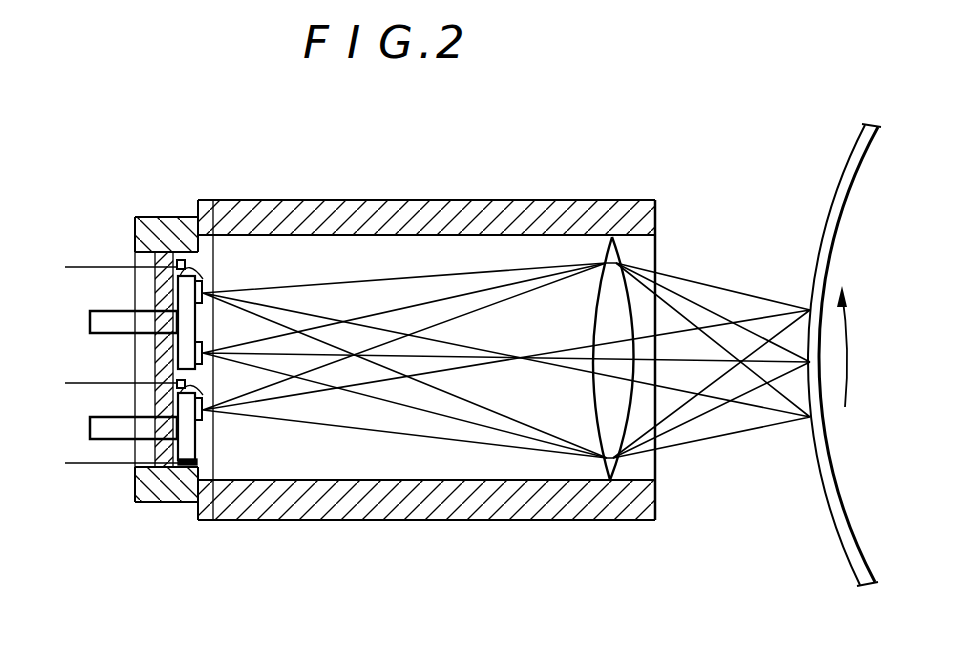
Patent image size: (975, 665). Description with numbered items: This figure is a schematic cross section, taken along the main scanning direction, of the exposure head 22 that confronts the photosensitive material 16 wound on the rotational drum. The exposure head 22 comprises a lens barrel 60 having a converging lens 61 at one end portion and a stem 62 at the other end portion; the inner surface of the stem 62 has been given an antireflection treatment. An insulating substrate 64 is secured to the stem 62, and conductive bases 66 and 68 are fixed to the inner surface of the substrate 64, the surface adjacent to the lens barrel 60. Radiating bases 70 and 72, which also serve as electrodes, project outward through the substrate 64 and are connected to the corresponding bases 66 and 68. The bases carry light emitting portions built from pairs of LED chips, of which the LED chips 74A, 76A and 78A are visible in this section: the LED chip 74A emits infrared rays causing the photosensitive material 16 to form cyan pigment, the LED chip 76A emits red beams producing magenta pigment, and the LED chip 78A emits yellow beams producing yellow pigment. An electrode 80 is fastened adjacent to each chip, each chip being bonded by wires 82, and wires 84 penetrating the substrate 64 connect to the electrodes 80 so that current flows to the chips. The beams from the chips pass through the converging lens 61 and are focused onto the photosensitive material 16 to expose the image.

The photosensitive material 16 is at (833, 207).
The exposure head 22 is at (480, 190).
The lens barrel 60 is at (340, 198).
The converging lens 61 is at (620, 373).
The stem 62 is at (155, 217).
The insulating substrate 64 is at (157, 282).
The conductive base 66 is at (157, 296).
The conductive base 68 is at (157, 398).
The radiating base 70 is at (100, 326).
The radiating base 72 is at (100, 428).
The LED chip 74A is at (205, 280).
The LED chip 76A is at (205, 345).
The LED chip 78A is at (205, 425).
The electrode 80 is at (182, 250).
The wires 82 is at (212, 235).
The wires 84 is at (80, 267).